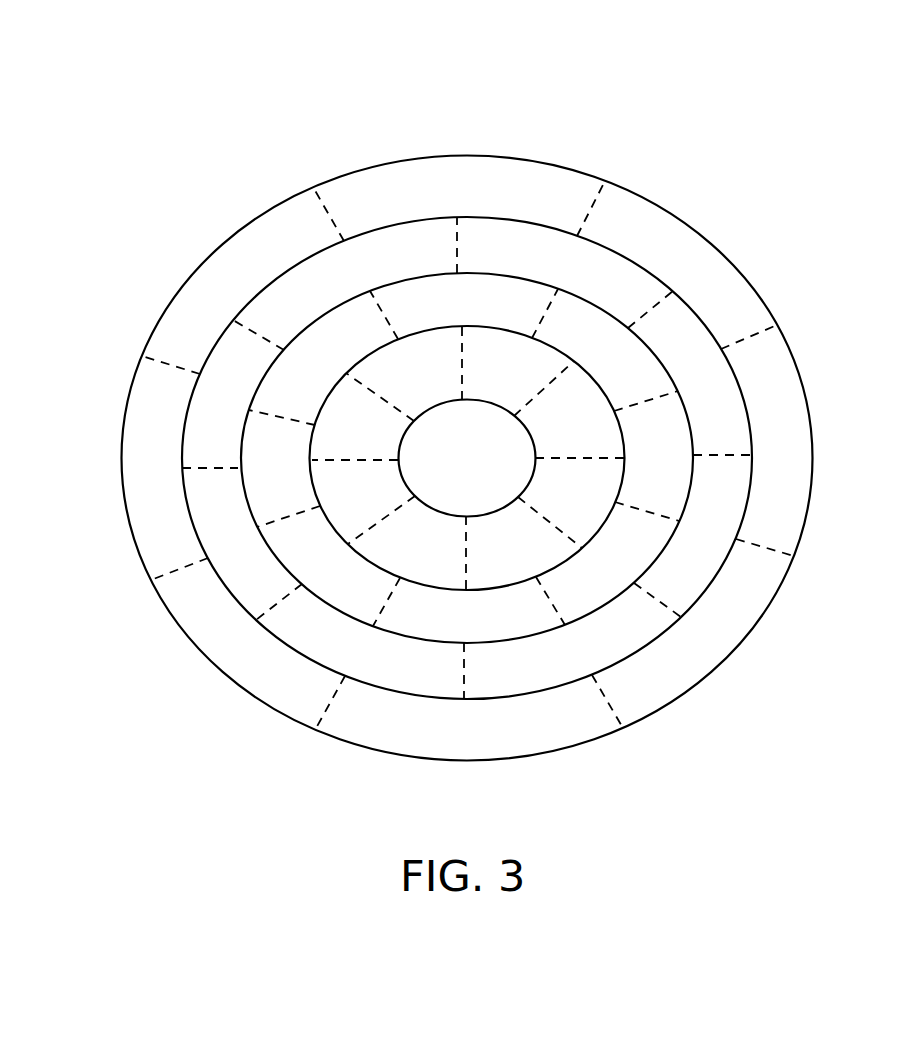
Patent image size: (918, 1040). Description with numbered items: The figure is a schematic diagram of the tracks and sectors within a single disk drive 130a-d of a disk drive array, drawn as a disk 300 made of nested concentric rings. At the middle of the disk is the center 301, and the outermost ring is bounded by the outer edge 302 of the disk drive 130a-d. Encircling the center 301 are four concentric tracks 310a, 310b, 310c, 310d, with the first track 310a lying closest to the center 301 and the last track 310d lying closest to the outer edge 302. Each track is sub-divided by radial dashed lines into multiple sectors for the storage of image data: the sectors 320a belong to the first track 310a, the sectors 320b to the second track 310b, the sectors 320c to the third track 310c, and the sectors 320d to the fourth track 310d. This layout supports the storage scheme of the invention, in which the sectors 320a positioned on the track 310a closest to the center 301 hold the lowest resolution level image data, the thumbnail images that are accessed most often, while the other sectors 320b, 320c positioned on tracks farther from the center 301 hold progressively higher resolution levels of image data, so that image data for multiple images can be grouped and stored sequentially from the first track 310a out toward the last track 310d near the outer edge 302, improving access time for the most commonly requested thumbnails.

The disk drive 130a-d is at (117, 98).
The light guide 300 is at (447, 155).
The center 301 is at (467, 458).
The outer edge 302 is at (718, 237).
The first track 310a is at (365, 355).
The track 310b is at (263, 379).
The track 310c is at (179, 437).
The last track 310d is at (121, 470).
The sectors of first track 320a is at (468, 458).
The sectors of second track 320b is at (465, 457).
The sectors of third track 320c is at (467, 458).
The sectors of fourth track 320d is at (468, 458).